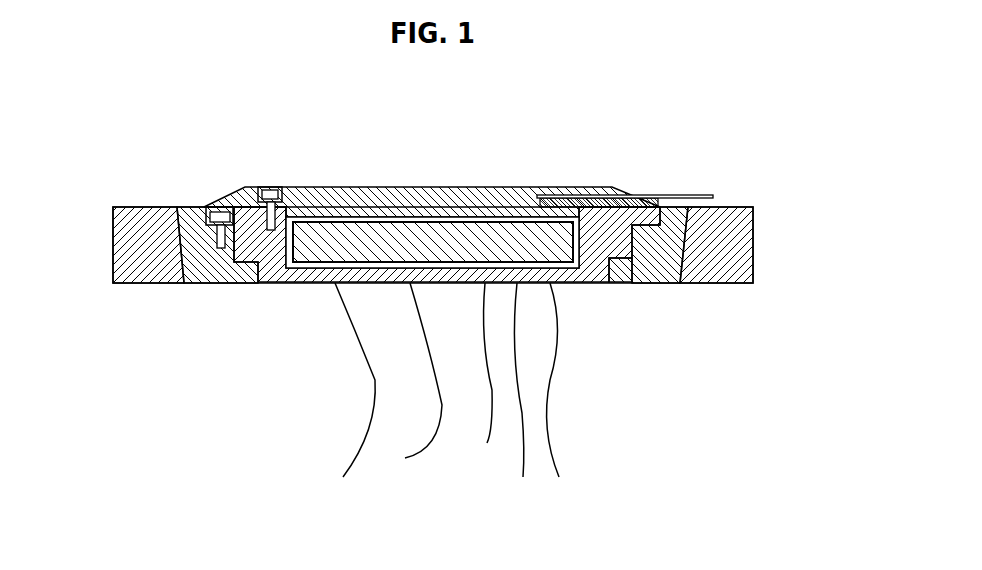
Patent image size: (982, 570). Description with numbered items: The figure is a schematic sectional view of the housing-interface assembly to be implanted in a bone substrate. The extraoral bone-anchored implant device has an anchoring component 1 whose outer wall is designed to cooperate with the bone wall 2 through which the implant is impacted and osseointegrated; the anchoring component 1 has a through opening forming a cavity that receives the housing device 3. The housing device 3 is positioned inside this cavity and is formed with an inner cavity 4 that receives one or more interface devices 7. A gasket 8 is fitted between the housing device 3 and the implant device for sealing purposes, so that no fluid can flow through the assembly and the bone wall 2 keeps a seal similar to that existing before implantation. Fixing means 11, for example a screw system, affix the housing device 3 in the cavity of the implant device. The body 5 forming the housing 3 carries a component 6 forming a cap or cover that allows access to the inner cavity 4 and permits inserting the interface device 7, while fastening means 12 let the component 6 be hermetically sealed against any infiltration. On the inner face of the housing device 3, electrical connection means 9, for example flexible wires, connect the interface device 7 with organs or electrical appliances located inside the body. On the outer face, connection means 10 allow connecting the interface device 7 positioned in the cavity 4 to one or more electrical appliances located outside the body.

The anchoring component 1 is at (217, 268).
The bone wall 2 is at (157, 267).
The housing device 3 is at (393, 167).
The inner cavity 4 is at (312, 268).
The body 5 is at (273, 267).
The component forming a cap or cover 6 is at (456, 197).
The interface device 7 is at (478, 238).
The gasket 8 is at (623, 263).
The electrical connection means 9 is at (532, 370).
The connection means 10 is at (673, 195).
The fixing means 11 is at (222, 214).
The fastening means 12 is at (270, 195).